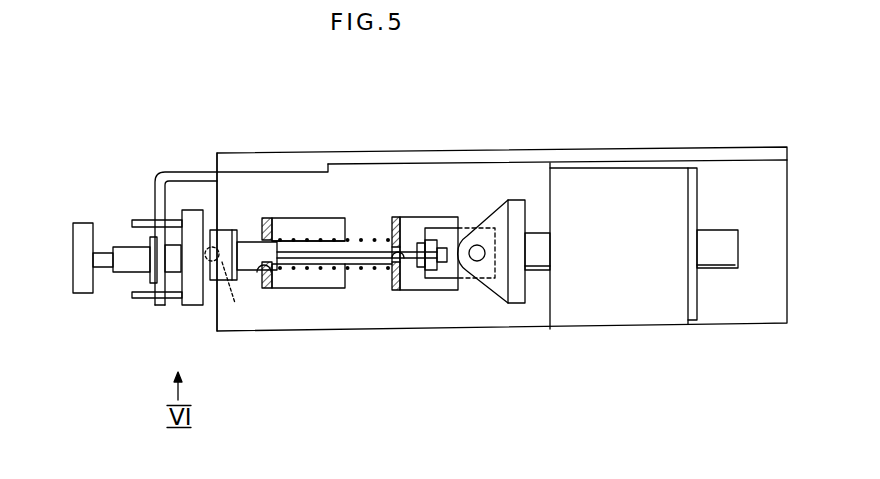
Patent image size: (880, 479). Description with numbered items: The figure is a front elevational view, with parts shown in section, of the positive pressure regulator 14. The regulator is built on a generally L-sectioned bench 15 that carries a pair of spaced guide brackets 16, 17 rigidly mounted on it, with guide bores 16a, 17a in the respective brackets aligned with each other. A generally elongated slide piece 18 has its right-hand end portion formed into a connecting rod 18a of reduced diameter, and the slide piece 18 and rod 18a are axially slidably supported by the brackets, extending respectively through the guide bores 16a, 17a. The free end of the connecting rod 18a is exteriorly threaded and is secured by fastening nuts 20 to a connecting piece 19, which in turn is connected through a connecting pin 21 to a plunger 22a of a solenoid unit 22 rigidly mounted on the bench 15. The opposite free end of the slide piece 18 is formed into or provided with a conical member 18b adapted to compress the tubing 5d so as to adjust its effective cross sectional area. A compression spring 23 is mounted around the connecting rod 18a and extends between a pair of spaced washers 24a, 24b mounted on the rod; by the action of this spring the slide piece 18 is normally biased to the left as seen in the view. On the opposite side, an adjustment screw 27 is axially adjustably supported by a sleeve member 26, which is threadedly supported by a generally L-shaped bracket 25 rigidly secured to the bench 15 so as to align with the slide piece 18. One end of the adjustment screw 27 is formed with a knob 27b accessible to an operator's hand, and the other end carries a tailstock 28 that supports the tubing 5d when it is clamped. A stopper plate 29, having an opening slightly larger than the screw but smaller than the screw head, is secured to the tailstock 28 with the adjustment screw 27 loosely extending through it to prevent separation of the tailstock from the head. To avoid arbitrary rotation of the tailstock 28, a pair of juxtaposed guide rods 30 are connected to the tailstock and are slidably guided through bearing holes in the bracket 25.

The positive pressure regulator 14 is at (615, 141).
The bench 15 is at (493, 328).
The guide bracket 16 is at (331, 289).
The guide bore 16a is at (262, 272).
The guide bracket 17 is at (445, 290).
The guide bore 17a is at (400, 262).
The slide piece 18 is at (250, 242).
The connecting rod 18a is at (390, 240).
The conical member 18b is at (231, 230).
The connecting piece 19 is at (468, 228).
The fastening nuts 20 is at (415, 243).
The connecting pin 21 is at (481, 246).
The solenoid unit 22 is at (628, 298).
The plunger 22a is at (517, 305).
The compression spring 23 is at (300, 238).
The washer 24a is at (276, 268).
The washer 24b is at (387, 268).
The L-shaped bracket 25 is at (158, 172).
The sleeve member 26 is at (127, 272).
The adjustment screw 27 is at (103, 253).
The knob 27b is at (82, 230).
The tailstock 28 is at (193, 306).
The stopper plate 29 is at (175, 273).
The guide rods 30 is at (138, 220).
The tubing 5d is at (231, 289).